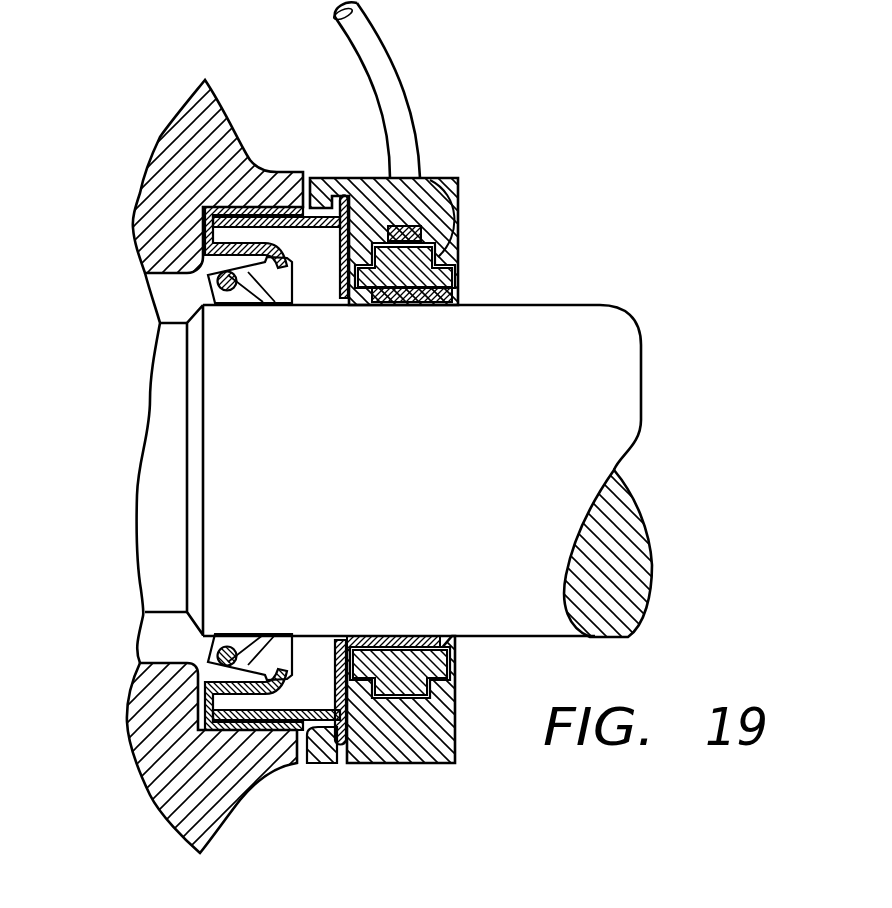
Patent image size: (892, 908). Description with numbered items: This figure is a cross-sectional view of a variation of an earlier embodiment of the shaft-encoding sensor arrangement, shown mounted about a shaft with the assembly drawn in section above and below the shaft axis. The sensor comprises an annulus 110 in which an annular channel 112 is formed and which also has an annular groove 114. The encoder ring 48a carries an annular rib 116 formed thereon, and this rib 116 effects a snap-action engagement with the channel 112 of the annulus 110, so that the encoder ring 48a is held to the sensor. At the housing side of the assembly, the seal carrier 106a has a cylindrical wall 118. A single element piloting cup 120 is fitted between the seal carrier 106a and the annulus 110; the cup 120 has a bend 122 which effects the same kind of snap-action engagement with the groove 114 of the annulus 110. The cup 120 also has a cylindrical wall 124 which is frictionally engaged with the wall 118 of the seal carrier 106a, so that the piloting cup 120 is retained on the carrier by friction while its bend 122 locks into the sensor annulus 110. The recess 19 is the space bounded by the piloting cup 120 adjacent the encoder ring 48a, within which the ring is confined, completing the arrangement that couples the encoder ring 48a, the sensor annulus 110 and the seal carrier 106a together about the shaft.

The recess 19 is at (320, 238).
The encoder ring 48a is at (403, 300).
The seal carrier 106a is at (205, 223).
The annulus 110 is at (433, 178).
The annular channel 112 is at (433, 237).
The annular groove 114 is at (320, 735).
The annular rib 116 is at (455, 269).
The cylindrical wall 118 is at (252, 207).
The piloting cup 120 is at (344, 300).
The bend 122 is at (345, 197).
The cylindrical wall 124 is at (205, 238).